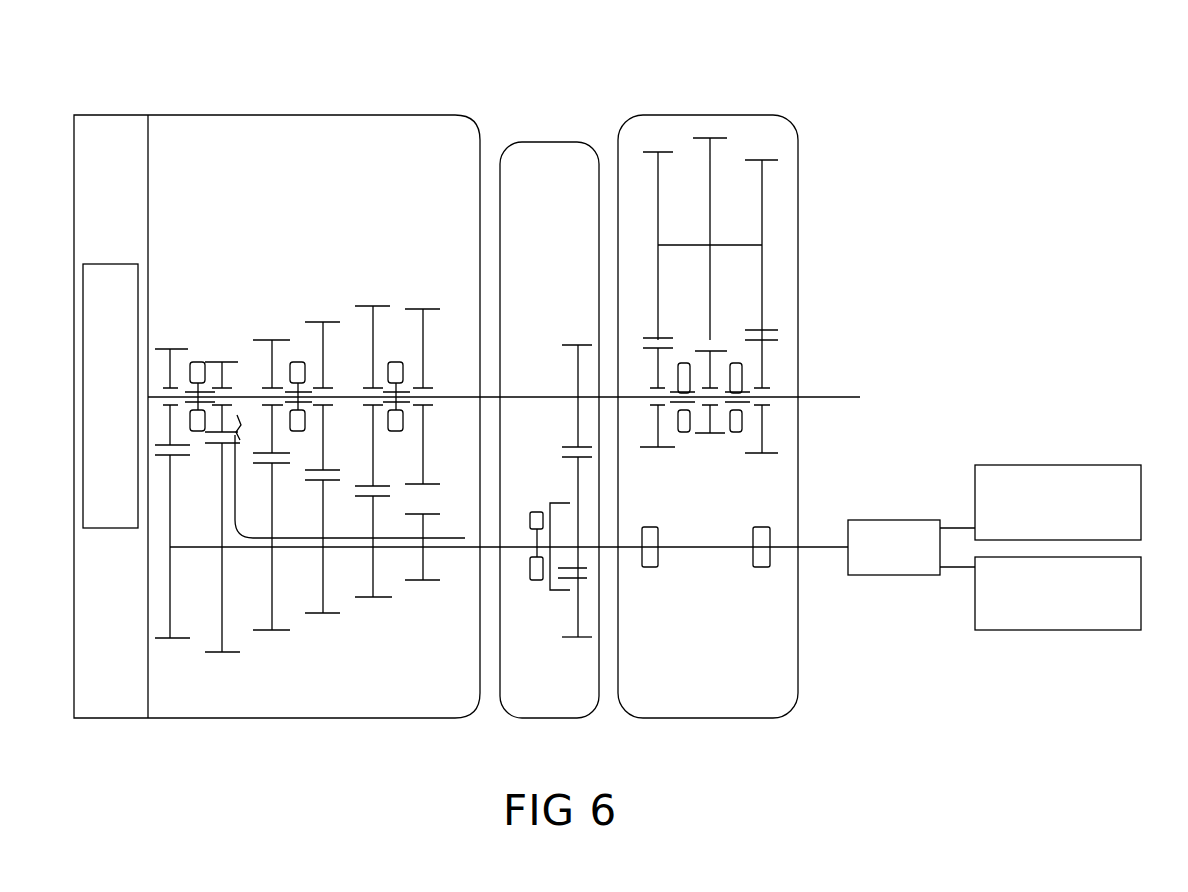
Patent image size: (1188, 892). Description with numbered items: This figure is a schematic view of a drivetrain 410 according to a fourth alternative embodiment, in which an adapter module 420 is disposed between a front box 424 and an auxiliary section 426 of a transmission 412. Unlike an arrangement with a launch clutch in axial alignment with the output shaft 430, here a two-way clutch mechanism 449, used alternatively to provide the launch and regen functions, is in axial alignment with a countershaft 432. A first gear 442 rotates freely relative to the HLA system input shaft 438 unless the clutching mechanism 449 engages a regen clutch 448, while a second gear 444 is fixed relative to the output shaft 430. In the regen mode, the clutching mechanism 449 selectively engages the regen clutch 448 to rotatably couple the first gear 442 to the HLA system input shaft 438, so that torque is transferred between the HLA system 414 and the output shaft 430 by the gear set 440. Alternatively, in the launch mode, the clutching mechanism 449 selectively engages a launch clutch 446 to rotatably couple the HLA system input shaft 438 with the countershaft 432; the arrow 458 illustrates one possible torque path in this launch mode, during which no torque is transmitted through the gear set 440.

The transmission 412 is at (428, 95).
The front box 424 is at (312, 115).
The drivetrain 410 is at (814, 104).
The adapter module 420 is at (550, 142).
The auxiliary section 426 is at (705, 115).
The output shaft 430 is at (352, 390).
The countershaft 432 is at (395, 548).
The arrow 458 is at (235, 490).
The input shaft 438 is at (783, 548).
The gear set 440 is at (560, 320).
The second gear 444 is at (575, 385).
The regen clutch 448 is at (568, 600).
The first gear 442 is at (580, 640).
The two-way clutch mechanism 449 is at (538, 508).
The launch clutch 446 is at (530, 598).
The HLA system 414 is at (1017, 435).